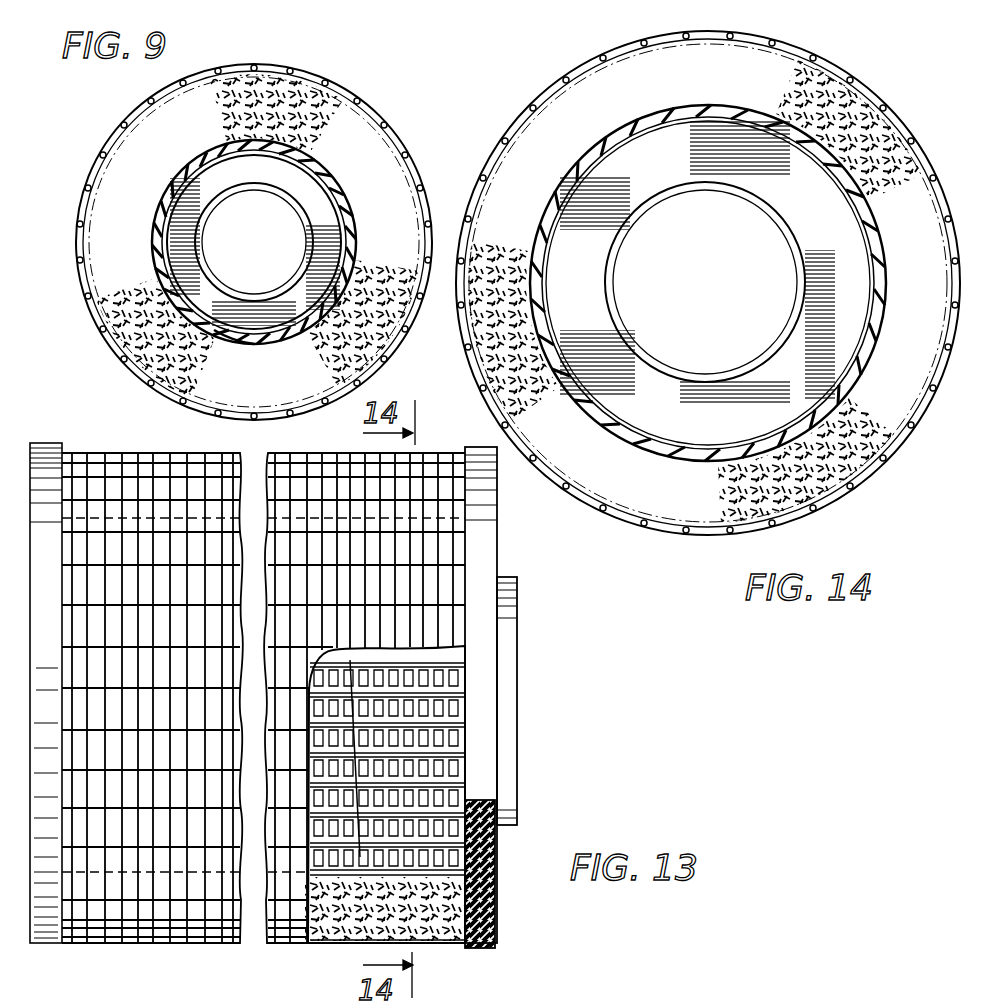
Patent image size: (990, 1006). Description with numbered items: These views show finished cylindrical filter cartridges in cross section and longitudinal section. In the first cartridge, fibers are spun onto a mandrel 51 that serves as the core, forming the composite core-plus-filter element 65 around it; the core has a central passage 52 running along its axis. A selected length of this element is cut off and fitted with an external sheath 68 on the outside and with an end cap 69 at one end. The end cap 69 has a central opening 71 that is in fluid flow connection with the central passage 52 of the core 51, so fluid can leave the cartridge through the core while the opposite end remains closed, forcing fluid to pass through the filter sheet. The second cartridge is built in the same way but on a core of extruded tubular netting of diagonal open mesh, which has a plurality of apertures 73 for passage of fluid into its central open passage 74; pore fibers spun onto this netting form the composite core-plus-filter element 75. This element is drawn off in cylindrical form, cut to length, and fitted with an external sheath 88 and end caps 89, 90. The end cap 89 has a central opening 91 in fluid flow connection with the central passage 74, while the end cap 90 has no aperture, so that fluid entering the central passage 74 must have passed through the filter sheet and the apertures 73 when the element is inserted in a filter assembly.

In FIG. 9, the mandrel 51 is at (232, 160).
In FIG. 9, the central passage 52 is at (234, 322).
In FIG. 9, the composite core-plus-filter element 65 is at (318, 118).
In FIG. 9, the external sheath 68 is at (272, 66).
In FIG. 9, the end cap 69 is at (315, 193).
In FIG. 9, the central opening 71 is at (268, 256).
In FIG. 14, the apertures 73 is at (637, 447).
In FIG. 13, the apertures 73 is at (480, 660).
In FIG. 14, the central open passage 74 is at (648, 133).
In FIG. 13, the central open passage 74 is at (360, 857).
In FIG. 14, the composite core-plus-filter element 75 is at (696, 510).
In FIG. 13, the composite core-plus-filter element 75 is at (312, 490).
In FIG. 14, the external sheath 88 is at (565, 79).
In FIG. 13, the external sheath 88 is at (450, 948).
In FIG. 14, the end cap 89 is at (678, 418).
In FIG. 13, the end cap 89 is at (483, 527).
In FIG. 13, the end cap 90 is at (43, 445).
In FIG. 14, the central opening 91 is at (722, 296).
In FIG. 13, the central opening 91 is at (483, 705).